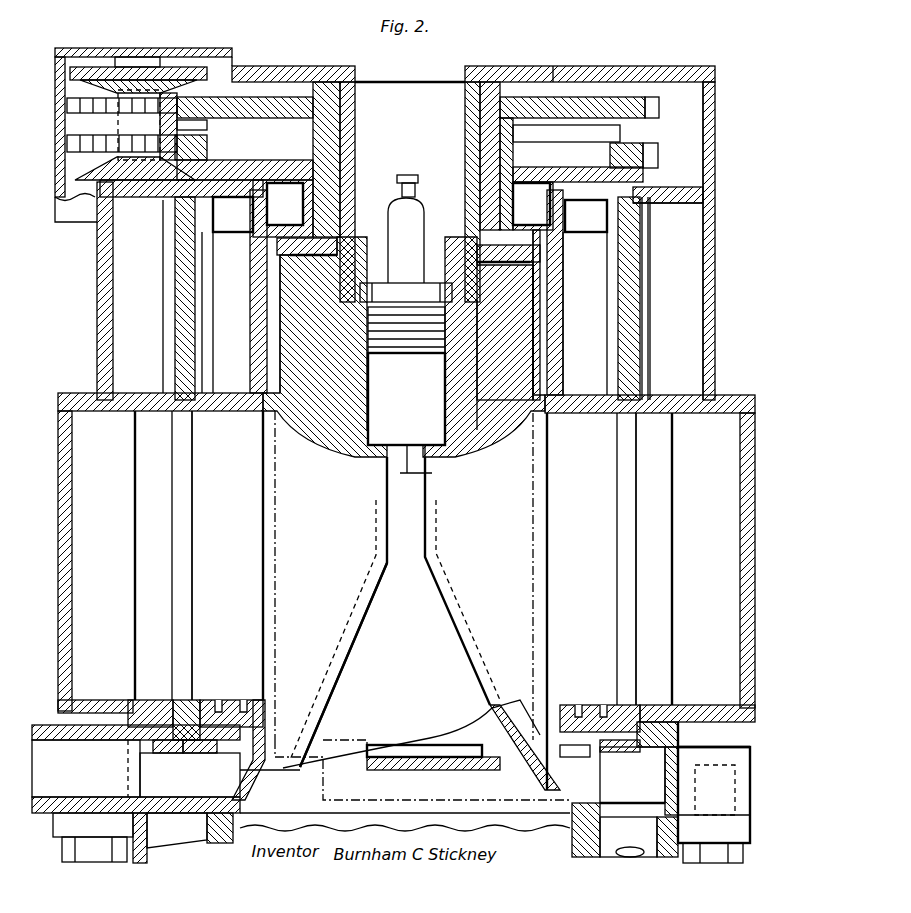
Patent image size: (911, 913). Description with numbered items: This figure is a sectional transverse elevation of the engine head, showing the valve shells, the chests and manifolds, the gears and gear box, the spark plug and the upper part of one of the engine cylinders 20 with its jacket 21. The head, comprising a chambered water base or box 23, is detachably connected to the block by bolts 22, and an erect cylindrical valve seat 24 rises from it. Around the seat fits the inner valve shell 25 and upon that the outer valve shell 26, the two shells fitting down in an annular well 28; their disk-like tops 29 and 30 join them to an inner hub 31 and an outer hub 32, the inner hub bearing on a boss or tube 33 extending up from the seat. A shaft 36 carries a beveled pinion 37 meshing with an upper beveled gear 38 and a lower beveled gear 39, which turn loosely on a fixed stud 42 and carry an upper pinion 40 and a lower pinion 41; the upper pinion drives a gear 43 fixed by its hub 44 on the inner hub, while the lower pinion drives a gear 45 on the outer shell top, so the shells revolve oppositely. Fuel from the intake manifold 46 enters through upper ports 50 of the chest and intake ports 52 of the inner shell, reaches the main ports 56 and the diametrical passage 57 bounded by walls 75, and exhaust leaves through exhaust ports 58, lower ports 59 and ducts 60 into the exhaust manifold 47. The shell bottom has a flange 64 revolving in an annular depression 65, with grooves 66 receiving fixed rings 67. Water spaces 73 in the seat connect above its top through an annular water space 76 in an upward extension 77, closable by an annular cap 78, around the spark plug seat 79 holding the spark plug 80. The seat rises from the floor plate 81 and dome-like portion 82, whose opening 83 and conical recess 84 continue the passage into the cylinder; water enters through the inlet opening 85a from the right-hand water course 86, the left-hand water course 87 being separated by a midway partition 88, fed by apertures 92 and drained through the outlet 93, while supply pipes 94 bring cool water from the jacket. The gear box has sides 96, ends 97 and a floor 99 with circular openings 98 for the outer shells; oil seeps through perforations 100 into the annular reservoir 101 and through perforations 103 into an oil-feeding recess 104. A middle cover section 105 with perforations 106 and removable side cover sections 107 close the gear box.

The engine cylinders 20 is at (575, 855).
The jacket 21 is at (133, 826).
The bolts 22 is at (62, 855).
The chambered base or box 23 is at (678, 747).
The valve seat 24 is at (280, 375).
The inner valve shell 25 is at (267, 320).
The outer valve shell 26 is at (175, 330).
The annular well 28 is at (652, 697).
The top of inner valve shell 29 is at (410, 214).
The top of outer valve shell 30 is at (273, 163).
The inner hub 31 is at (343, 157).
The outer hub 32 is at (513, 212).
The boss or tube 33 is at (465, 122).
The shaft 36 is at (160, 127).
The beveled pinion 37 is at (197, 128).
The upper beveled gear 38 is at (146, 72).
The lower beveled gear 39 is at (65, 189).
The upper pinion 40 is at (67, 107).
The lower pinion 41 is at (67, 148).
The fixed stud 42 is at (128, 57).
The gear 43 is at (278, 118).
The hub 44 is at (566, 132).
The gear 45 is at (660, 150).
The intake manifold 46 is at (395, 291).
The exhaust manifold 47 is at (406, 561).
The upper ports 50 is at (163, 293).
The intake ports 52 is at (213, 347).
The main ports 56 is at (266, 572).
The main diametrical passage 57 is at (395, 612).
The exhaust ports 58 is at (402, 555).
The lower ports 59 is at (192, 458).
The ports or ducts 60 is at (403, 558).
The stiffening circumferential flange 64 is at (176, 740).
The annular depression 65 is at (195, 753).
The annular grooves 66 is at (226, 705).
The fixed rings 67 is at (585, 708).
The water space 73 is at (275, 553).
The walls 75 is at (512, 432).
The annular water space 76 is at (505, 331).
The upward extension 77 is at (536, 310).
The annular cap 78 is at (307, 260).
The spark plug seat 79 is at (477, 385).
The spark plug 80 is at (406, 399).
The floor plate 81 is at (600, 808).
The dome-like portion 82 is at (250, 815).
The opening 83 is at (269, 750).
The conical recess 84 is at (350, 636).
The water inlet opening 85a is at (440, 748).
The right-hand water course 86 is at (639, 781).
The left-hand water course 87 is at (136, 783).
The midway partition 88 is at (330, 783).
The apertures 92 is at (183, 838).
The outlet 93 is at (136, 761).
The supply pipes 94 is at (628, 837).
The gear box sides 96 is at (58, 72).
The gear box ends 97 is at (695, 141).
The circular openings 98 is at (640, 192).
The floor of gear box 99 is at (683, 193).
The perforations 100 is at (538, 172).
The annular reservoir 101 is at (408, 203).
The perforations 103 is at (560, 237).
The oil-feeding recess 104 is at (543, 357).
The middle cover section 105 is at (503, 70).
The perforations 106 is at (470, 70).
The side cover sections 107 is at (248, 68).